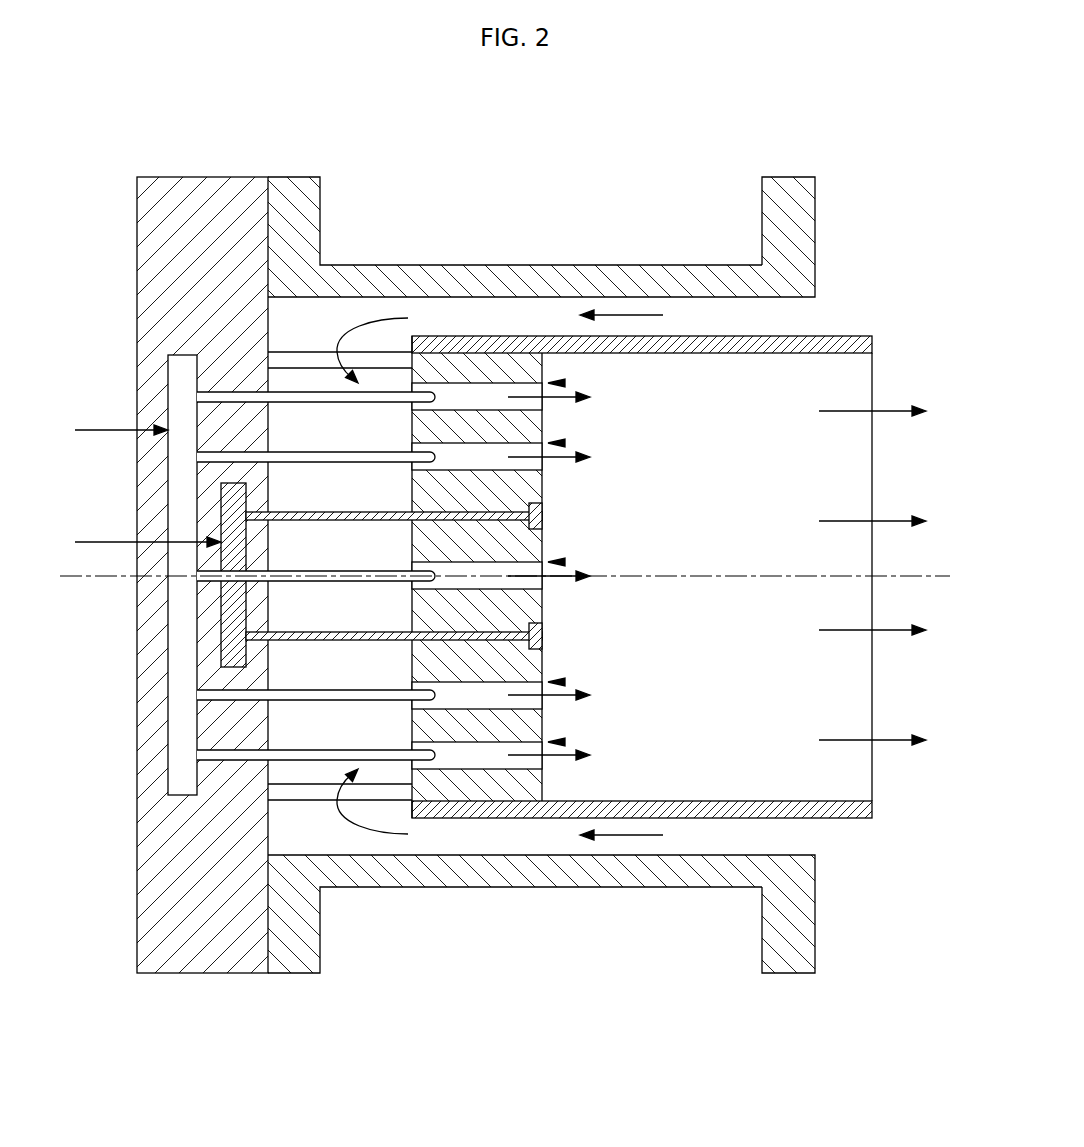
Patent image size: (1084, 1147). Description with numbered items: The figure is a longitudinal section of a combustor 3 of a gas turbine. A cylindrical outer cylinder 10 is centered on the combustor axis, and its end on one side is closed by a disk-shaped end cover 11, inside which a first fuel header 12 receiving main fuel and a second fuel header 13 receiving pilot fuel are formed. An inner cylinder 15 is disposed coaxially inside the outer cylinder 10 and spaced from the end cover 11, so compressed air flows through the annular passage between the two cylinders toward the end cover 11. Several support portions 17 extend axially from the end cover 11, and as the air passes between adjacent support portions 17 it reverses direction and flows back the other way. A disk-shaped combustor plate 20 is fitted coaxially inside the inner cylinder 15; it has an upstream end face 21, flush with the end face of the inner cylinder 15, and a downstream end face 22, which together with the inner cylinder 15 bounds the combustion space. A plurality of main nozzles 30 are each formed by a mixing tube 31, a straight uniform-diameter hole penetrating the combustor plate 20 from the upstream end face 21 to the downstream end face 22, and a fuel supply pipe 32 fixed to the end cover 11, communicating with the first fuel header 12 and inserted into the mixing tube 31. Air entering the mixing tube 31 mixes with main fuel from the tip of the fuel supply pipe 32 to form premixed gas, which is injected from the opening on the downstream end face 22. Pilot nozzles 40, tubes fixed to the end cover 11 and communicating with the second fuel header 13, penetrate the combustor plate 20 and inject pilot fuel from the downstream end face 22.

The combustor 3 is at (714, 130).
The outer cylinder 10 is at (527, 263).
The end cover 11 is at (223, 198).
The first fuel header 12 is at (178, 462).
The second fuel header 13 is at (235, 617).
The inner cylinder 15 is at (700, 345).
The support portion 17 is at (302, 360).
The combustor plate 20 is at (474, 338).
The upstream end face 21 is at (408, 340).
The downstream end face 22 is at (556, 350).
The main nozzle 30 is at (565, 383).
The mixing tube 31 is at (545, 407).
The fuel supply pipe 32 is at (325, 403).
The pilot nozzle 40 is at (546, 516).